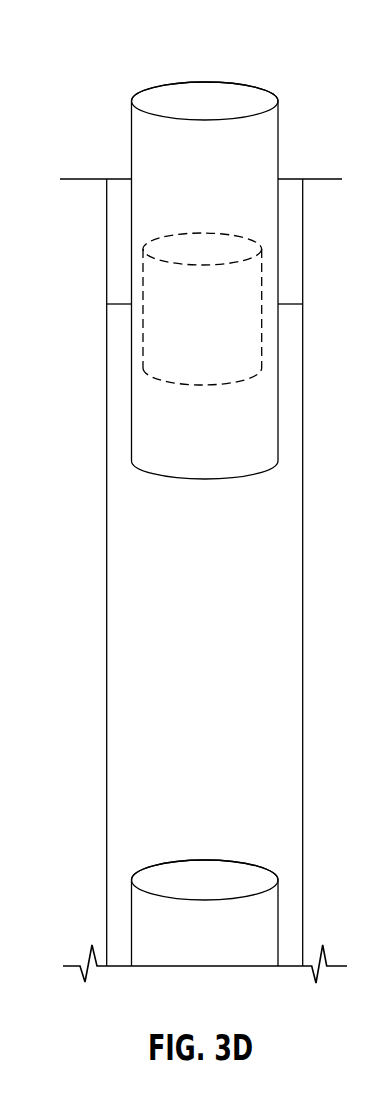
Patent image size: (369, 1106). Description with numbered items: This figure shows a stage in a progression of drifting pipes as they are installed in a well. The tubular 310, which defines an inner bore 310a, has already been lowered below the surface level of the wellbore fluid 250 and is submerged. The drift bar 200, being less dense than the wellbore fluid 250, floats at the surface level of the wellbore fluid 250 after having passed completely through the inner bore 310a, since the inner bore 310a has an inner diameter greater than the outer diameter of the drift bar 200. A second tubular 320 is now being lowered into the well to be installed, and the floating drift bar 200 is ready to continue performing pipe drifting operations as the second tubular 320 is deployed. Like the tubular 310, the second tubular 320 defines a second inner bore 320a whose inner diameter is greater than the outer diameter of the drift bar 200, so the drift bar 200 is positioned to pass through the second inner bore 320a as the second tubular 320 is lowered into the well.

The drift bar 200 is at (222, 332).
The wellbore fluid 250 is at (220, 722).
The tubular 310 is at (131, 910).
The inner bore 310a is at (243, 862).
The second tubular 320 is at (131, 133).
The second inner bore 320a is at (236, 105).